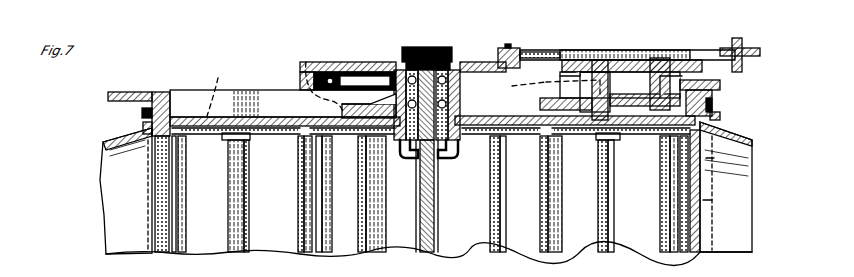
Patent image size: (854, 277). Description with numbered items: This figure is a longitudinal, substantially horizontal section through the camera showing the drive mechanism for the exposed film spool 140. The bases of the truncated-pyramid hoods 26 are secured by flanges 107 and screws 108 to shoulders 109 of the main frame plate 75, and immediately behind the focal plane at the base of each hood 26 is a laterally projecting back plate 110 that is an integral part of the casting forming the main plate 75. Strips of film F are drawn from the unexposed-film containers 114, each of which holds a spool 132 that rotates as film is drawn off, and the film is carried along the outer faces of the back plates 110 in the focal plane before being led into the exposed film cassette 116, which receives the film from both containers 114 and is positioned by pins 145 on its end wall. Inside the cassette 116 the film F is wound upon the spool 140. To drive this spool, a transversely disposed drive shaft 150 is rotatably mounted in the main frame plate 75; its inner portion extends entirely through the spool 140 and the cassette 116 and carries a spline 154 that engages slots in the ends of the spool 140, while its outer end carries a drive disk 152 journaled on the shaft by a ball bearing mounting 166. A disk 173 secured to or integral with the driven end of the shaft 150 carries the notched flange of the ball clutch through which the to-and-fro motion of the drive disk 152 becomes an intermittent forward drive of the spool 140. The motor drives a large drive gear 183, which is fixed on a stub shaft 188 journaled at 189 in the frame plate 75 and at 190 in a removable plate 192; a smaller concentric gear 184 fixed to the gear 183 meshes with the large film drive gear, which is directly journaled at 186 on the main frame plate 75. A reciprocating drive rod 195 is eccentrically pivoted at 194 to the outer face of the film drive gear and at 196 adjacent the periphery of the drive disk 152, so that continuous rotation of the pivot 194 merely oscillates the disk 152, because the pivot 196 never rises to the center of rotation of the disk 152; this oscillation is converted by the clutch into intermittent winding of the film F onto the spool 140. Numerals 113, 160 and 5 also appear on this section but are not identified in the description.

The frame section 5 is at (706, 172).
The hood 26 is at (108, 200).
The main frame plate 75 is at (172, 92).
The flange 107 is at (166, 92).
The screw 108 is at (142, 113).
The shoulder 109 is at (143, 128).
The back plate 110 is at (170, 200).
The panel 113 is at (226, 78).
The unexposed-film container 114 is at (298, 188).
The exposed film cassette 116 is at (322, 206).
The spool 132 is at (246, 232).
The exposed film spool 140 is at (370, 224).
The pin 145 is at (319, 80).
The drive shaft 150 is at (434, 198).
The drive disk 152 is at (374, 62).
The spline 154 is at (436, 176).
The retainer 160 is at (452, 142).
The ball bearing mounting 166 is at (440, 48).
The disk 173 is at (352, 73).
The large drive gear 183 is at (532, 148).
The smaller concentric gear 184 is at (606, 60).
The journal 186 is at (686, 60).
The stub shaft 188 is at (590, 90).
The journal 189 is at (622, 140).
The journal 190 is at (578, 60).
The removable plate 192 is at (552, 48).
The pivot 194 is at (738, 40).
The reciprocating drive rod 195 is at (658, 50).
The pivot 196 is at (506, 46).
The film F is at (704, 200).